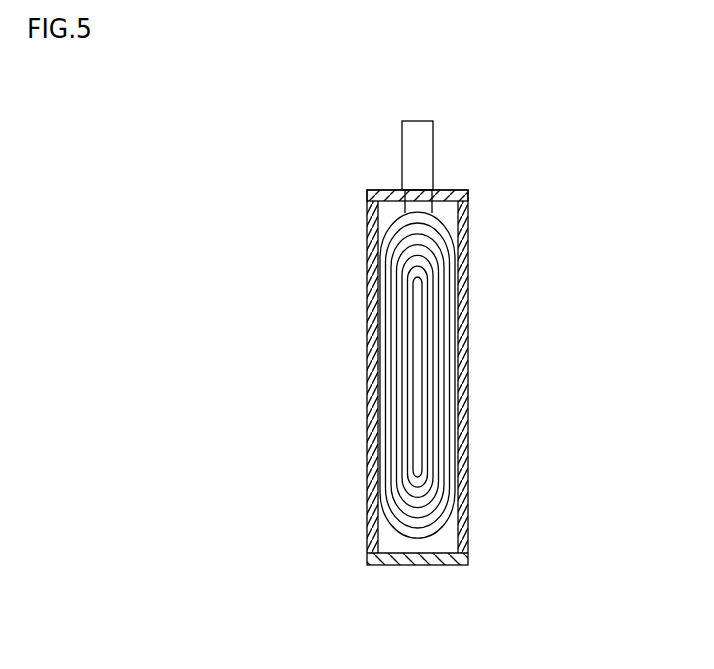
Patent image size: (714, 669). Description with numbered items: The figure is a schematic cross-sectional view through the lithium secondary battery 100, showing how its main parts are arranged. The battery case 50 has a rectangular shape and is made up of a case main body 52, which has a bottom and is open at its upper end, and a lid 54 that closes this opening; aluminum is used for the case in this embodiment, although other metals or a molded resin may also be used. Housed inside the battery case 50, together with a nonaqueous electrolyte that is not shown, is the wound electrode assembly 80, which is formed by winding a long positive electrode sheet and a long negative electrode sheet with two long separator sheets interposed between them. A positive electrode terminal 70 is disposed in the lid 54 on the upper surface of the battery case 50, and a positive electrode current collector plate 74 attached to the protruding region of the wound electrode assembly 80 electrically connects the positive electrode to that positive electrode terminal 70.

The lithium secondary battery 100 is at (615, 68).
The battery case 50 is at (366, 418).
The case main body 52 is at (469, 526).
The lid 54 is at (458, 188).
The positive electrode terminal 70 is at (422, 120).
The positive electrode current collector plate 74 is at (408, 212).
The wound electrode assembly 80 is at (396, 536).